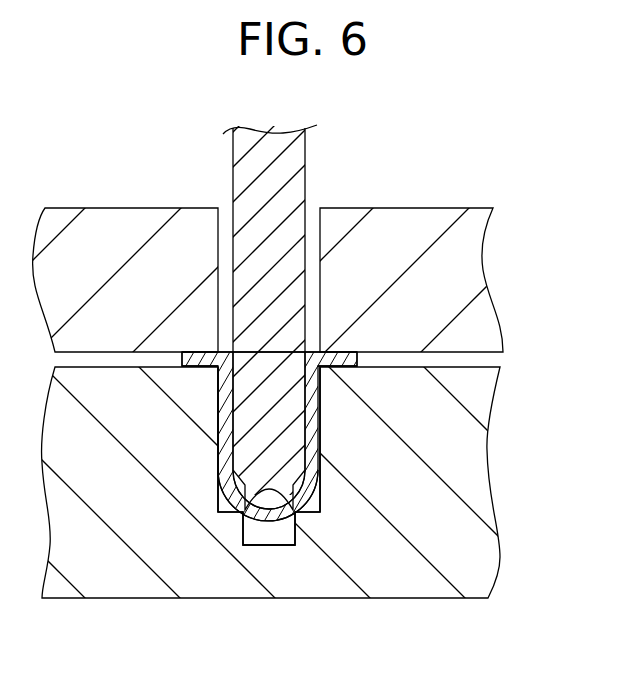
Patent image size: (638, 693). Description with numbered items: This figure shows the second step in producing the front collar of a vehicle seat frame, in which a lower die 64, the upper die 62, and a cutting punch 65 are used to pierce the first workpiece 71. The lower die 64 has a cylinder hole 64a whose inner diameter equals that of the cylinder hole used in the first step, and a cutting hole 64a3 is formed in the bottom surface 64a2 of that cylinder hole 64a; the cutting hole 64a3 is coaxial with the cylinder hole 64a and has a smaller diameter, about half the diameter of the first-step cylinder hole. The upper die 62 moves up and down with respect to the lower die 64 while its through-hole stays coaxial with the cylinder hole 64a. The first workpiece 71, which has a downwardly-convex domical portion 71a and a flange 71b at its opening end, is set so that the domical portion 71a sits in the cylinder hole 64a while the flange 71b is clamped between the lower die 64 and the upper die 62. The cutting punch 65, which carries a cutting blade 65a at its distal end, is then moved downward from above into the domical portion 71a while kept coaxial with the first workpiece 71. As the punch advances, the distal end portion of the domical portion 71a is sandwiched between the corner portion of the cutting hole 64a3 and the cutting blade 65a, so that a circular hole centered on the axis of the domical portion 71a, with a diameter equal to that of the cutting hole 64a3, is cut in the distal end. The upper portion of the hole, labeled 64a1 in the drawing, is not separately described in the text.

The upper die 62 is at (487, 270).
The lower die 64 is at (488, 428).
The cylinder hole 64a is at (232, 513).
The upper portion of hole 64a1 is at (240, 372).
The bottom surface 64a2 is at (323, 500).
The cutting hole 64a3 is at (282, 540).
The cutting punch 65 is at (233, 165).
The cutting blade 65a is at (263, 520).
The first workpiece 71 is at (274, 450).
The domical portion 71a is at (265, 521).
The flange 71b is at (338, 350).